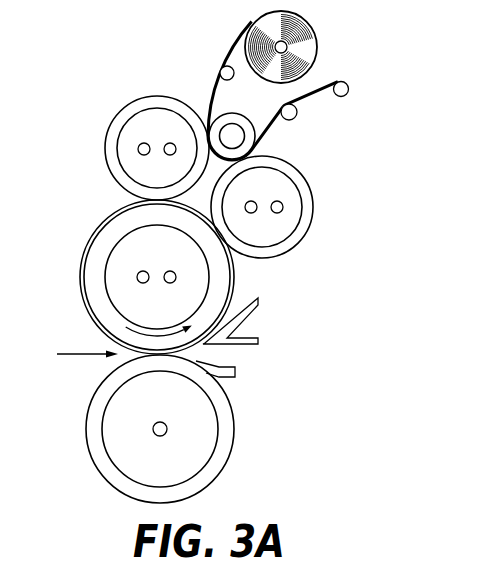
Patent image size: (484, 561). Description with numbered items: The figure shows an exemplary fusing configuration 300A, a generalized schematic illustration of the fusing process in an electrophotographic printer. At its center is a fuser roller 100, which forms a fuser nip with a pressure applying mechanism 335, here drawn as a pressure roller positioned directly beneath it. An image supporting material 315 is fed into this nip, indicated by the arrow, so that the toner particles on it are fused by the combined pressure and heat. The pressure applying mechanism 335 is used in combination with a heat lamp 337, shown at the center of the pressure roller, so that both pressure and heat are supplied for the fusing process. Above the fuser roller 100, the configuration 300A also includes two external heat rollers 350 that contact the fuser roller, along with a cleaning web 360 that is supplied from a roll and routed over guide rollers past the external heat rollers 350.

The fusing configuration 300A is at (140, 52).
The external heat roller 350 is at (121, 111).
The fuser roller 100 is at (89, 229).
The cleaning web 360 is at (335, 49).
The image supporting material 315 is at (88, 355).
The pressure applying mechanism 335 is at (239, 401).
The heat lamp 337 is at (158, 437).